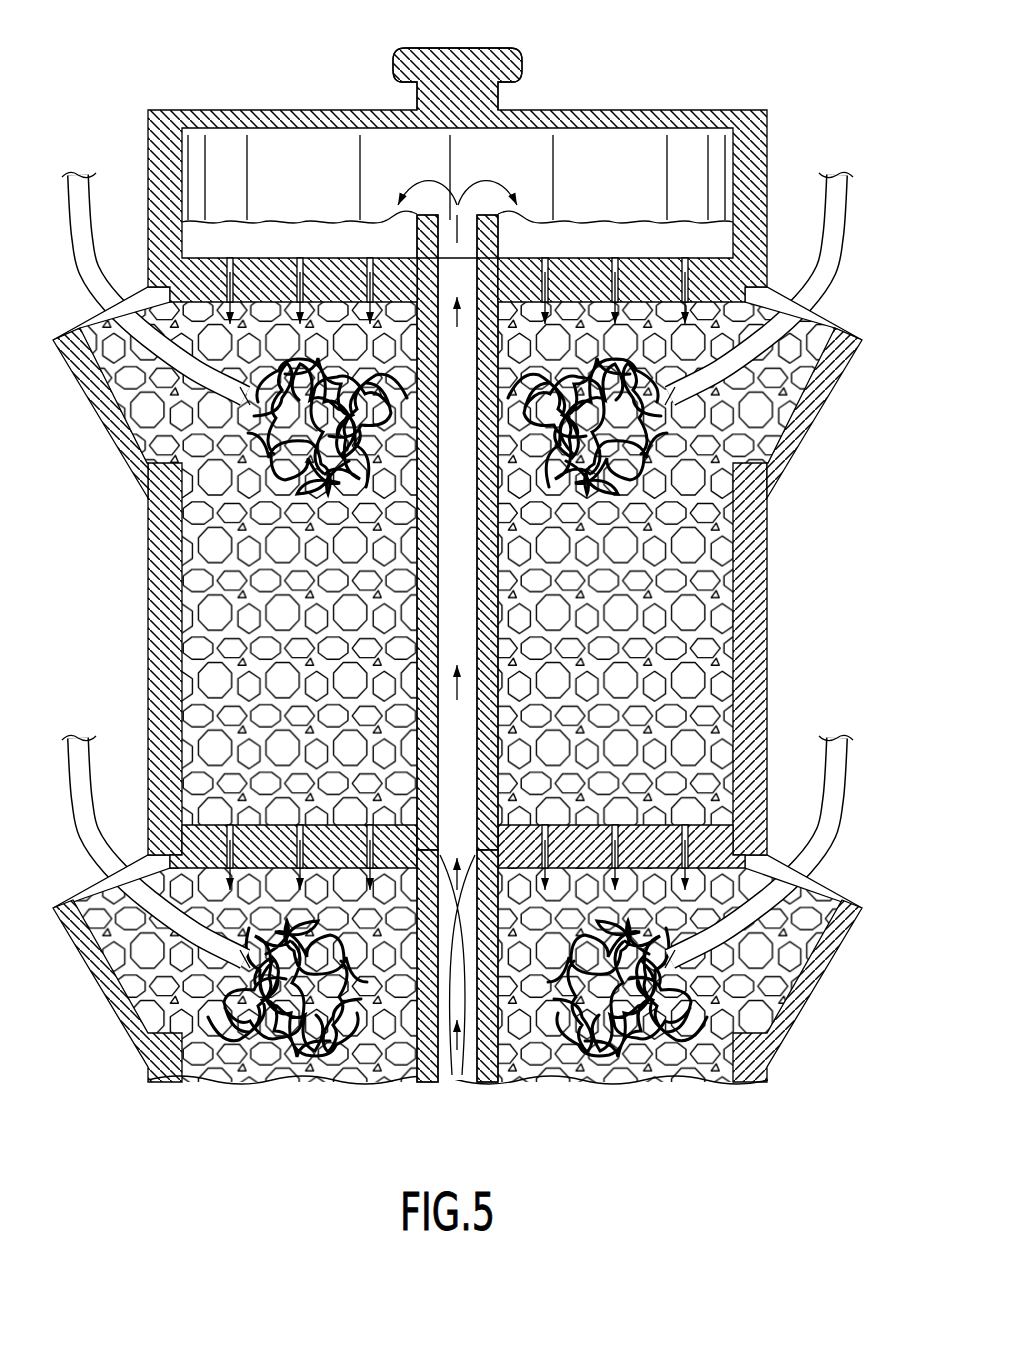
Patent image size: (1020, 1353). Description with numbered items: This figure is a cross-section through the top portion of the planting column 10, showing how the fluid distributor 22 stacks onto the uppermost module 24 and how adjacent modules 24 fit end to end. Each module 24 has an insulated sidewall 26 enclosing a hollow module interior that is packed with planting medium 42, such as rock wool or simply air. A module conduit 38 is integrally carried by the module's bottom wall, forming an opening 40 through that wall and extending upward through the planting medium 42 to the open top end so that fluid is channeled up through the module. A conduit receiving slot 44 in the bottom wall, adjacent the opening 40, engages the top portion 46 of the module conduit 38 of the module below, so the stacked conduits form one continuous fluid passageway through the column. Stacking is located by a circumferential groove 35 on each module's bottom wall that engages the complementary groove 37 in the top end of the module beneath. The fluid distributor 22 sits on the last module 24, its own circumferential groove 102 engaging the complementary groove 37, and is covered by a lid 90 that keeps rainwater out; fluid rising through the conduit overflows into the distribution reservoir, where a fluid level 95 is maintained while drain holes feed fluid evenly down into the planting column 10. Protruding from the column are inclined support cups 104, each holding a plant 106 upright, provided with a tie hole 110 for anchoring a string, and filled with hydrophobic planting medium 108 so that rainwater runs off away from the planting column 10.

The planting column 10 is at (137, 738).
The fluid distributor 22 is at (770, 160).
The module 24 is at (768, 545).
The insulated sidewall 26 is at (172, 612).
The circumferential groove 35 is at (150, 855).
The complementary groove 37 is at (158, 298).
The module conduit 38 is at (490, 1083).
The opening 40 is at (505, 890).
The planting medium 42 is at (620, 680).
The conduit receiving slot 44 is at (590, 1010).
The top portion 46 is at (433, 877).
The lid 90 is at (640, 110).
The fluid level 95 is at (310, 218).
The circumferential groove 102 is at (133, 292).
The inclined support cup 104 is at (118, 445).
The plant 106 is at (845, 205).
The hydrophobic planting medium 108 is at (758, 420).
The tie hole 110 is at (850, 352).